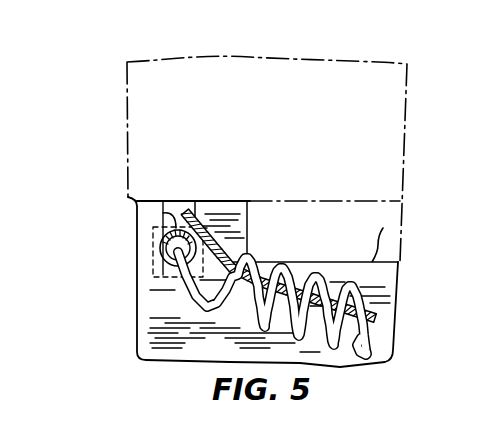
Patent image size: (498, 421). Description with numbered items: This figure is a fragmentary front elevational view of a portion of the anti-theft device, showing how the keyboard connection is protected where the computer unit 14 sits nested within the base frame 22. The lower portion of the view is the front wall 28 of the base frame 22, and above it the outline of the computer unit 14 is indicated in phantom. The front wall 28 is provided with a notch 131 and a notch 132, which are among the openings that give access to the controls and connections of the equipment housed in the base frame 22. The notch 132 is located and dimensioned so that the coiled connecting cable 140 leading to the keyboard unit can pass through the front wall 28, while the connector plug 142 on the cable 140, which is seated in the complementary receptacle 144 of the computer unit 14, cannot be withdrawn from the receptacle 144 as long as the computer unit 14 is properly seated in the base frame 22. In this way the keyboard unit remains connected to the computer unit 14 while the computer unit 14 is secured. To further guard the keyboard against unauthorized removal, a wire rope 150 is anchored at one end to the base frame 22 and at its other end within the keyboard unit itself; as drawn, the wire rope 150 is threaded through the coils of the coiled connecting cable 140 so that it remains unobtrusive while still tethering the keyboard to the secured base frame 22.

The computer unit 14 is at (142, 78).
The base frame 22 is at (155, 333).
The front wall 28 is at (145, 297).
The notch 131 is at (314, 234).
The notch 132 is at (163, 258).
The coiled connecting cable 140 is at (287, 260).
The connector plug 142 is at (165, 244).
The receptacle 144 is at (163, 213).
The wire rope 150 is at (207, 256).